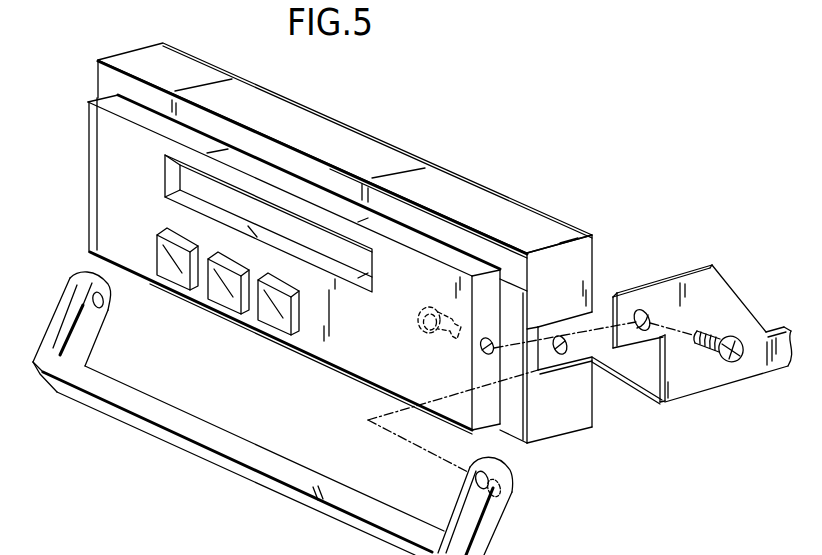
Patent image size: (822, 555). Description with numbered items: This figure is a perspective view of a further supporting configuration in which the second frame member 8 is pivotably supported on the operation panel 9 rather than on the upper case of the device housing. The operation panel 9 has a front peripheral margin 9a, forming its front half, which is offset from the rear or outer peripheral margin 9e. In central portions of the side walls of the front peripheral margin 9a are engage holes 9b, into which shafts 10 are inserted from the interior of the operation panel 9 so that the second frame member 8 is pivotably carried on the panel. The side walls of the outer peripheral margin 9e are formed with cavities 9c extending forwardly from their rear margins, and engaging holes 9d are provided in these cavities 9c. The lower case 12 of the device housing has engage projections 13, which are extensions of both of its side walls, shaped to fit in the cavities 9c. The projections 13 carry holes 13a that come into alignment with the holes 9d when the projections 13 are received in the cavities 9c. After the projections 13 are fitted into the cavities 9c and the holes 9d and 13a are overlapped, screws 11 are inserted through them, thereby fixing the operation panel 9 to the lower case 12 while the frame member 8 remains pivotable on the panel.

The second frame member 8 is at (256, 481).
The operation panel 9 is at (345, 343).
The front peripheral margin 9a is at (112, 83).
The engage holes 9b is at (493, 354).
The cavities 9c is at (576, 356).
The engaging holes 9d is at (561, 355).
The outer peripheral margin 9e is at (263, 102).
The shafts 10 is at (411, 327).
The screws 11 is at (727, 361).
The lower case 12 is at (645, 372).
The engage projections 13 is at (665, 293).
The holes 13a is at (645, 309).